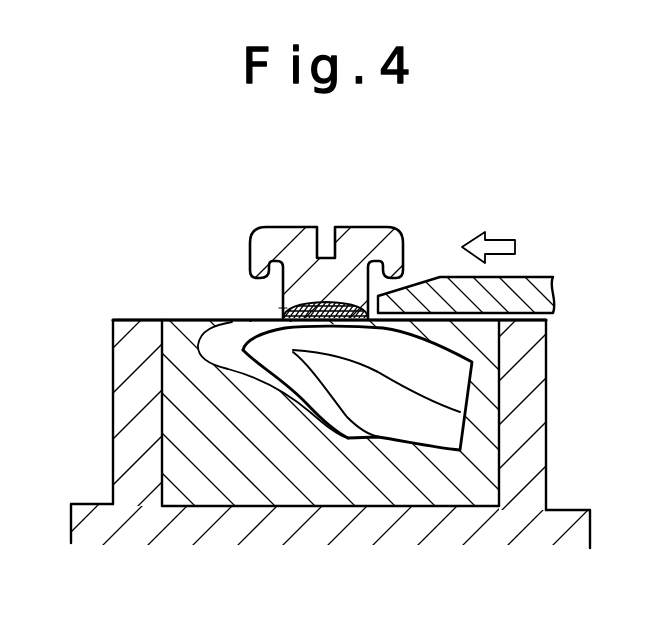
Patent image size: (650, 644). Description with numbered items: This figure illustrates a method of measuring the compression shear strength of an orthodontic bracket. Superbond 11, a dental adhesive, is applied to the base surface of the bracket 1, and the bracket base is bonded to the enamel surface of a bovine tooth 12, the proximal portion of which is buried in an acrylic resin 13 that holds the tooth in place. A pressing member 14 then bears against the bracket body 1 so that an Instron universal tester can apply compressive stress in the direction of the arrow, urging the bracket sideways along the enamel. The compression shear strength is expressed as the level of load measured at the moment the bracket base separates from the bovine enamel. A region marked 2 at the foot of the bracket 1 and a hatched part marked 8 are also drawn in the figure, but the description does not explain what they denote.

The bracket 1 is at (272, 228).
The clearance gap 2 is at (283, 306).
The body block 8 is at (127, 405).
The Superbond 11 is at (347, 300).
The bovine tooth 12 is at (443, 423).
The acrylic resin 13 is at (316, 497).
The pressing member 14 is at (513, 300).